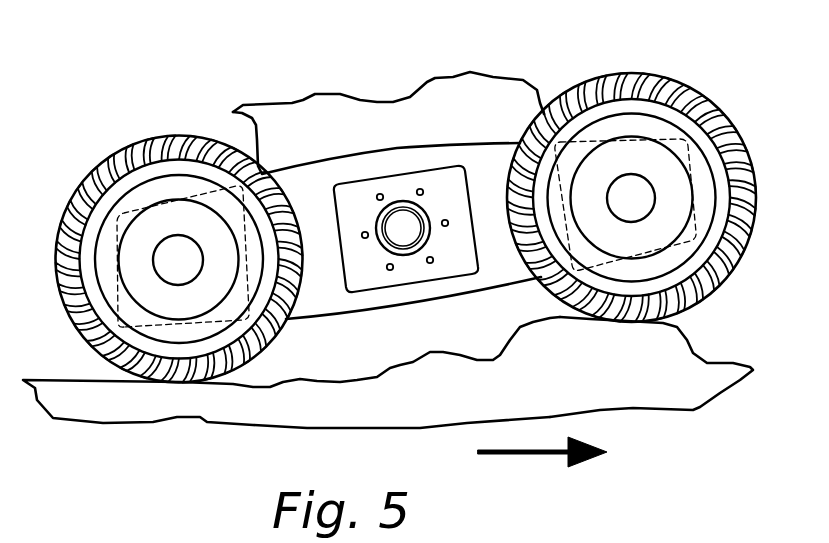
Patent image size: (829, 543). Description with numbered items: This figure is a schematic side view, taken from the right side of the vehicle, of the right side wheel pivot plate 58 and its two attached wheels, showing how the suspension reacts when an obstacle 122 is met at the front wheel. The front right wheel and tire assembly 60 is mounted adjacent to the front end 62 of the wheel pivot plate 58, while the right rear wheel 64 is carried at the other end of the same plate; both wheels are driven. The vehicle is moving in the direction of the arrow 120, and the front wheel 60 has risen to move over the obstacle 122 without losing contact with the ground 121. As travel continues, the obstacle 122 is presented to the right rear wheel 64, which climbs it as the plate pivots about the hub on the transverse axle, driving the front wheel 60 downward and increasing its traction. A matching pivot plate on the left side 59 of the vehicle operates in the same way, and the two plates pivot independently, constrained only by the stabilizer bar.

The right side wheel pivot plate 58 is at (446, 143).
The left side 59 is at (293, 103).
The front right wheel and tire assembly 60 is at (697, 100).
The front end 62 is at (588, 140).
The right rear wheel 64 is at (87, 177).
The arrow 120 is at (540, 456).
The ground 121 is at (280, 385).
The obstacle 122 is at (667, 324).